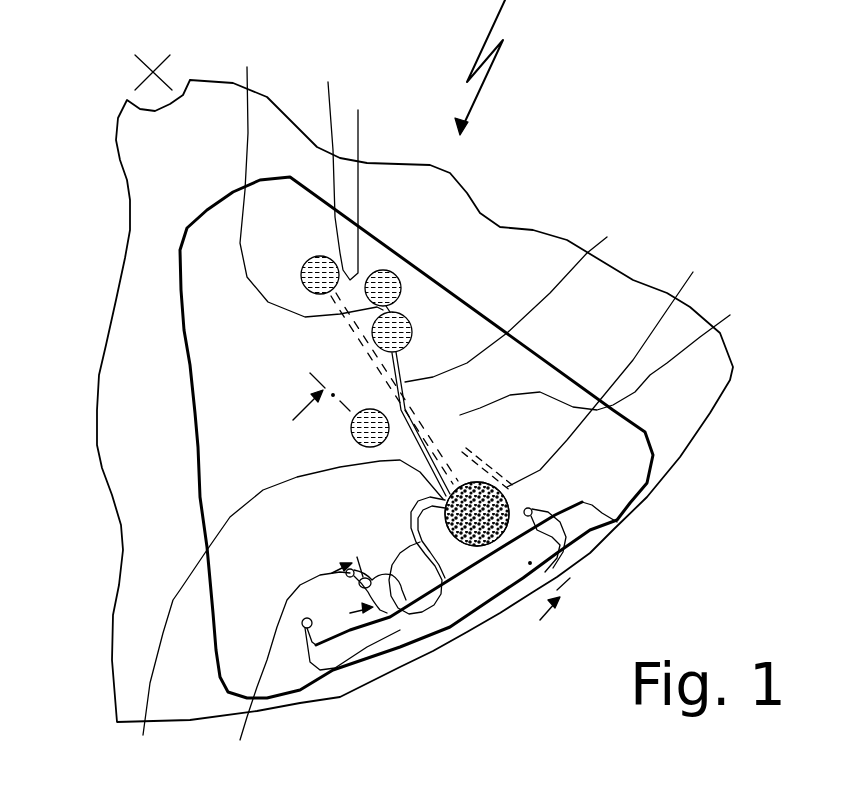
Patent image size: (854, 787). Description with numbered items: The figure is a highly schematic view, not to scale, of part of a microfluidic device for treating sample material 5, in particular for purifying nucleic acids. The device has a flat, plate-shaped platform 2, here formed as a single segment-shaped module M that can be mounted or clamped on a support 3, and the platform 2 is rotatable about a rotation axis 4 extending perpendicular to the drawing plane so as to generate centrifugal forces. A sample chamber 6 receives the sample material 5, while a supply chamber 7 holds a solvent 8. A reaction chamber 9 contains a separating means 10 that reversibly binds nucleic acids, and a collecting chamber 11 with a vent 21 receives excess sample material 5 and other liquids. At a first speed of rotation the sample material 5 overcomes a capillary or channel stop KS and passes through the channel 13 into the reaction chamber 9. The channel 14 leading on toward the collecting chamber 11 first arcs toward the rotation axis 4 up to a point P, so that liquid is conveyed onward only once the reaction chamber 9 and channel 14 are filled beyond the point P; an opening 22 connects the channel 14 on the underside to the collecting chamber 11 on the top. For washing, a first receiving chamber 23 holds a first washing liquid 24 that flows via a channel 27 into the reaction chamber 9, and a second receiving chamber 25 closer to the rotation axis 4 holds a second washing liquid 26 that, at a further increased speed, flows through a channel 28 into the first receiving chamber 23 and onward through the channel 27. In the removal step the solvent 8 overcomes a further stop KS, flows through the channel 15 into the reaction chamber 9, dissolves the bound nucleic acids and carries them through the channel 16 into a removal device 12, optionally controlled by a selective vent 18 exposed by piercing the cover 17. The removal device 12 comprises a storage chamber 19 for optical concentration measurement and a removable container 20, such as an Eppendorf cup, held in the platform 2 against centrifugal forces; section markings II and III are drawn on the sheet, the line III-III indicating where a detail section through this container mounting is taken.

The platform 2 is at (468, 437).
The support 3 is at (439, 401).
The rotation axis 4 is at (102, 70).
The sample material 5 is at (224, 459).
The sample chamber 6 is at (250, 509).
The supply chamber 7 is at (338, 170).
The solvent 8 is at (314, 172).
The reaction chamber 9 is at (604, 538).
The separating means 10 is at (506, 540).
The collecting chamber 11 is at (477, 592).
The removal device 12 is at (382, 669).
The channel 13 is at (295, 621).
The channel 14 is at (632, 524).
The channel 15 is at (574, 369).
The channel 16 is at (417, 607).
The cover 17 is at (408, 760).
The vent 18 is at (325, 645).
The storage chamber 19 is at (452, 637).
The container 20 is at (363, 651).
The vent 21 is at (335, 684).
The opening 22 is at (616, 545).
The first receiving chamber 23 is at (495, 273).
The first washing liquid 24 is at (465, 249).
The second receiving chamber 25 is at (412, 226).
The second washing liquid 26 is at (393, 198).
The channel 27 is at (544, 331).
The channel 28 is at (215, 338).
The module M is at (549, 545).
The point P is at (472, 506).
The capillary or channel stop KS is at (379, 404).
The section II- II is at (414, 511).
The section line III- III is at (335, 593).